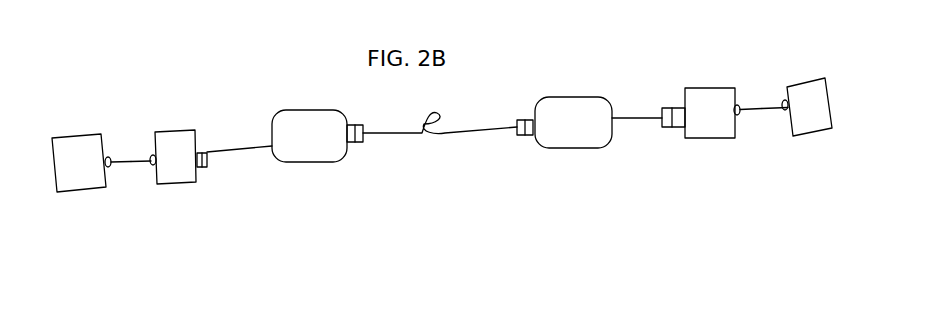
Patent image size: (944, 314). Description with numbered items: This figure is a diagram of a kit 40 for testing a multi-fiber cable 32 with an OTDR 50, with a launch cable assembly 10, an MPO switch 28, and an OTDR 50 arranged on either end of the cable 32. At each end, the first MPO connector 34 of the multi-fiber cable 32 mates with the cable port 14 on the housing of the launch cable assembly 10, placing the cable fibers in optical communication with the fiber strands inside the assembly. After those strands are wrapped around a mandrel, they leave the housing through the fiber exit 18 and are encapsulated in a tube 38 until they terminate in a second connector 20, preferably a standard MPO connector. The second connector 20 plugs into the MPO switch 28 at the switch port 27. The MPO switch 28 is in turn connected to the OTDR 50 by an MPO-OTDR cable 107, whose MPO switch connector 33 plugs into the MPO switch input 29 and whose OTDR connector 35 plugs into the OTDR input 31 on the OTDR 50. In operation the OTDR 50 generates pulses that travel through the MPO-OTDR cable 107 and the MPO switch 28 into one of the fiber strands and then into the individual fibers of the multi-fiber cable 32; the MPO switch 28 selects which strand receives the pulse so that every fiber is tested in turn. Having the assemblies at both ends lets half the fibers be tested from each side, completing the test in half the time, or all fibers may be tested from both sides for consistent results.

The launch cable assembly 10 is at (442, 129).
The cable port 14 is at (348, 143).
The fiber exit 18 is at (272, 153).
The second connector 20 is at (207, 165).
The switch port 27 is at (198, 150).
The MPO switch 28 is at (445, 136).
The MPO switch input 29 is at (152, 156).
The OTDR input 31 is at (107, 156).
The multi-fiber cable 32 is at (401, 130).
The MPO switch connector 33 is at (155, 167).
The first MPO connector 34 is at (360, 143).
The OTDR connector 35 is at (110, 168).
The tube 38 is at (255, 148).
The kit 40 is at (298, 260).
The OTDR 50 is at (442, 135).
The MPO-OTDR cable 107 is at (130, 163).